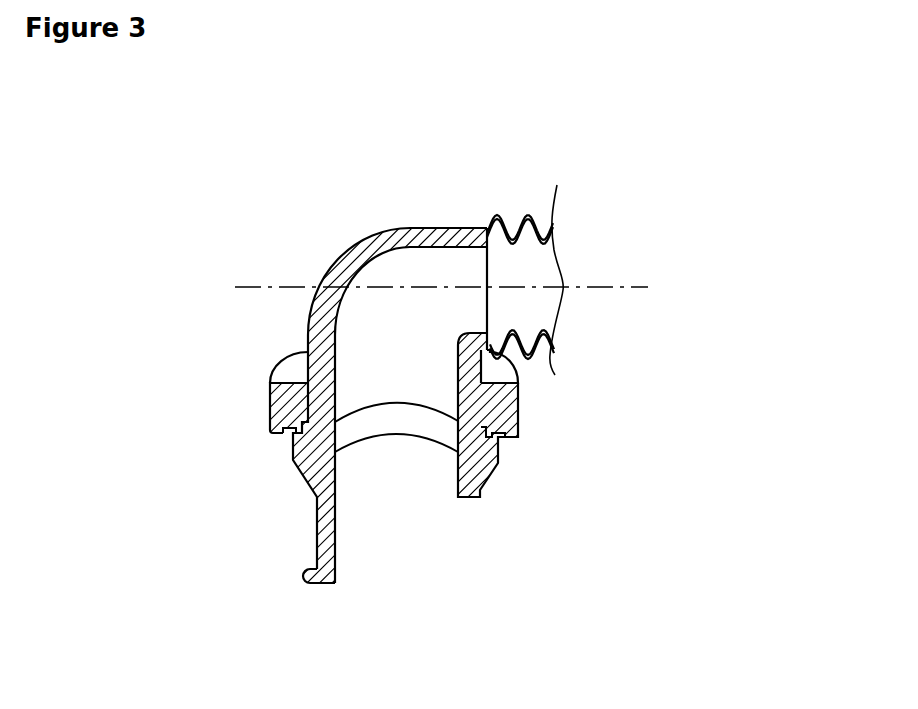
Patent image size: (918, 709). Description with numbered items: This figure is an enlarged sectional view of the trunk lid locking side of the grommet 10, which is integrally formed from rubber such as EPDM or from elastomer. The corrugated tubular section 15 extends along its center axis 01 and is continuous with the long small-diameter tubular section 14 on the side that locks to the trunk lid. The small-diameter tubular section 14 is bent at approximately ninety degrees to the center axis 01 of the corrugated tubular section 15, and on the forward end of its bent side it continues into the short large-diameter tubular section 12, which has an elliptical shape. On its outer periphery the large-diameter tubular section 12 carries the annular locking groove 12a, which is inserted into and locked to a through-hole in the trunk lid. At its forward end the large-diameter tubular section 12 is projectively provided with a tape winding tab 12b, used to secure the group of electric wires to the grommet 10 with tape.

The grommet 10 is at (389, 400).
The small-diameter tubular section 14 is at (395, 238).
The corrugated tubular section 15 is at (530, 217).
The large-diameter tubular section 12 is at (280, 403).
The locking groove 12a is at (278, 434).
The tape winding tab 12b is at (320, 587).
The center axis 01 is at (461, 290).